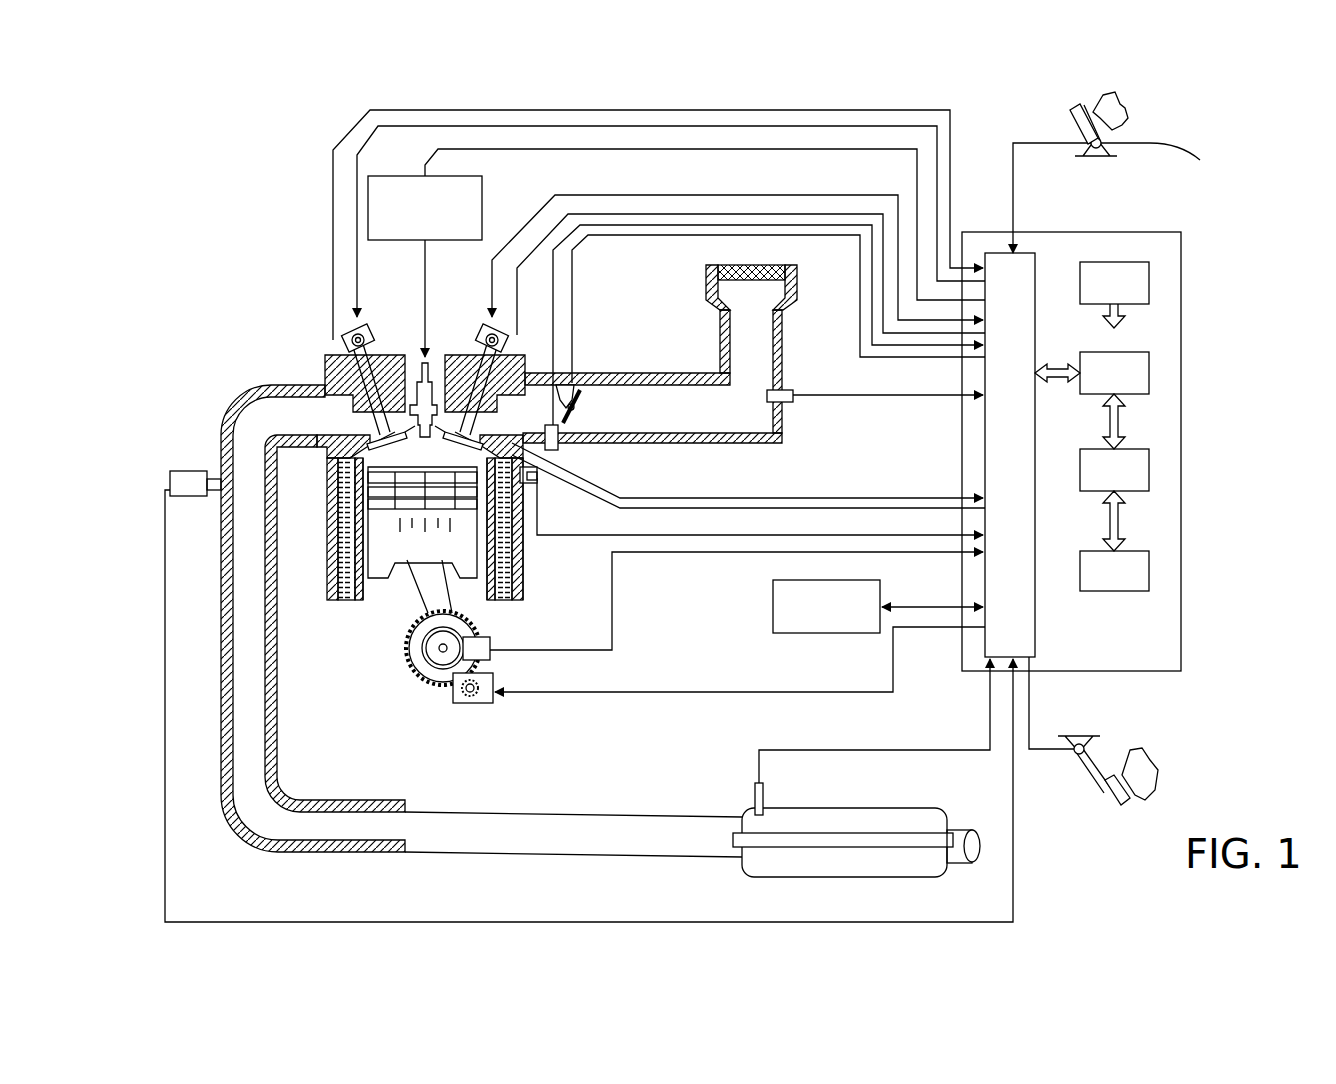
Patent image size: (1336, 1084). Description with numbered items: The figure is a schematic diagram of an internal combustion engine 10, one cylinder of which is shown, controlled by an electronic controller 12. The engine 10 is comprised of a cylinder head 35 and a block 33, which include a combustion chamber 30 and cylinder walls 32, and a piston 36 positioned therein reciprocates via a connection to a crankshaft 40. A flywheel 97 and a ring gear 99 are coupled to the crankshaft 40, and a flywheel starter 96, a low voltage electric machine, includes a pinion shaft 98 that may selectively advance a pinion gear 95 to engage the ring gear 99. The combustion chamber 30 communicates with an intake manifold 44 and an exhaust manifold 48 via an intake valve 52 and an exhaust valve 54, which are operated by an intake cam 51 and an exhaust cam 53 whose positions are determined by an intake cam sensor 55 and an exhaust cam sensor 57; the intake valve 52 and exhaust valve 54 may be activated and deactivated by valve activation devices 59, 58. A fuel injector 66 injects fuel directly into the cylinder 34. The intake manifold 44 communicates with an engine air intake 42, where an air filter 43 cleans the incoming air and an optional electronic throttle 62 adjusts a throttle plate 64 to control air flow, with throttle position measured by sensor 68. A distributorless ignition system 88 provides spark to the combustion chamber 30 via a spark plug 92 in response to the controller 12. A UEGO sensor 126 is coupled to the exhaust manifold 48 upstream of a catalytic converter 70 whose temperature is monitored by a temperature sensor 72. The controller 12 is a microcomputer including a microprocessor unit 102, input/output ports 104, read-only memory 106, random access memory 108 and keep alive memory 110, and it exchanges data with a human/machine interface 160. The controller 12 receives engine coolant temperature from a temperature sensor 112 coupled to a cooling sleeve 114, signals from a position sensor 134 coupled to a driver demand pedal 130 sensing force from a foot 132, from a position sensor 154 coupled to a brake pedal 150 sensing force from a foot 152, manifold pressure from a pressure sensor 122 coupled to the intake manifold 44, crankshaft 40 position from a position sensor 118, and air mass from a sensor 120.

The internal combustion engine 10 is at (264, 308).
The electronic controller 12 is at (1178, 233).
The combustion chamber 30 is at (345, 532).
The cylinder walls 32 is at (368, 592).
The block 33 is at (338, 495).
The cylinder 34 is at (398, 585).
The cylinder head 35 is at (322, 356).
The piston 36 is at (407, 548).
The crankshaft 40 is at (436, 668).
The engine air intake 42 is at (708, 292).
The air filter 43 is at (772, 283).
The intake manifold 44 is at (652, 408).
The exhaust manifold 48 is at (481, 621).
The intake cam 51 is at (488, 330).
The intake valve 52 is at (470, 422).
The exhaust cam 53 is at (362, 332).
The exhaust valve 54 is at (362, 402).
The intake cam sensor 55 is at (500, 342).
The exhaust cam sensor 57 is at (347, 343).
The valve activation device 58 is at (370, 342).
The valve activation device 59 is at (480, 348).
The electronic throttle 62 is at (578, 395).
The throttle plate 64 is at (566, 422).
The fuel injector 66 is at (538, 472).
The throttle position sensor 68 is at (560, 386).
The catalytic converter 70 is at (785, 808).
The temperature sensor 72 is at (762, 784).
The distributorless ignition system 88 is at (384, 176).
The spark plug 92 is at (428, 378).
The pinion gear 95 is at (476, 704).
The flywheel starter 96 is at (492, 703).
The flywheel 97 is at (422, 645).
The pinion shaft 98 is at (460, 698).
The ring gear 99 is at (435, 672).
The microprocessor unit 102 is at (1150, 373).
The input/output ports 104 is at (1018, 252).
The read-only memory 106 is at (1150, 283).
The random access memory 108 is at (1150, 471).
The keep alive memory 110 is at (1150, 571).
The temperature sensor 112 is at (535, 483).
The cooling sleeve 114 is at (508, 548).
The position sensor 118 is at (490, 640).
The air mass sensor 120 is at (785, 390).
The pressure sensor 122 is at (560, 450).
The Universal Exhaust Gas Oxygen sensor 126 is at (170, 478).
The driver demand pedal 130 is at (1080, 122).
The foot 132 is at (1120, 105).
The position sensor 134 is at (1130, 198).
The brake pedal 150 is at (1097, 790).
The foot 152 is at (1135, 755).
The position sensor 154 is at (1066, 738).
The human/machine interface 160 is at (878, 606).